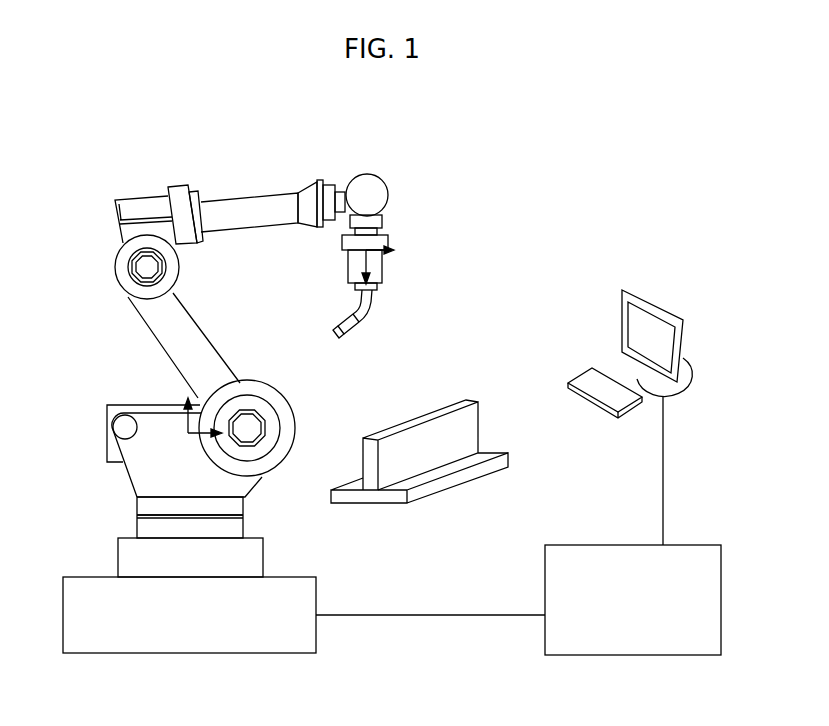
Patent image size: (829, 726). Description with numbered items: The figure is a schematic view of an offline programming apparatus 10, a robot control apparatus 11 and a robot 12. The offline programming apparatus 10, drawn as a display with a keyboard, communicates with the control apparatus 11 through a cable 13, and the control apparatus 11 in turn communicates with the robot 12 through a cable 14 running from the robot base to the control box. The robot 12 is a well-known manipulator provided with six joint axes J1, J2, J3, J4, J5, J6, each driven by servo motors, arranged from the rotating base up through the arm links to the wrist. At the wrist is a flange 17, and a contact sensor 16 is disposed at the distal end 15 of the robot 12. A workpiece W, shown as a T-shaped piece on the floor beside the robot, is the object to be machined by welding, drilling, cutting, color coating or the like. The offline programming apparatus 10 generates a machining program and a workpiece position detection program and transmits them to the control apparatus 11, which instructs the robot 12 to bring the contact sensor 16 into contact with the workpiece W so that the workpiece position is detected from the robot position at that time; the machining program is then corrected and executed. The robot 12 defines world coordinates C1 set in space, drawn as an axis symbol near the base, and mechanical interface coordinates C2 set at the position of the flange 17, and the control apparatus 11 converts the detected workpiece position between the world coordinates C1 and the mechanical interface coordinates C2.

The offline programming apparatus 10 is at (666, 300).
The robot control apparatus 11 is at (686, 545).
The robot 12 is at (217, 199).
The cable 13 is at (663, 490).
The cable 14 is at (393, 617).
The distal end 15 is at (356, 346).
The contact sensor 16 is at (337, 325).
The flange 17 is at (389, 239).
The workpiece W is at (452, 402).
The joint axis J1 is at (188, 529).
The joint axis J2 is at (263, 407).
The joint axis J3 is at (115, 256).
The joint axis J4 is at (302, 202).
The joint axis J5 is at (374, 191).
The joint axis J6 is at (373, 210).
The world coordinates C1 is at (186, 431).
The mechanical interface coordinates C2 is at (383, 264).